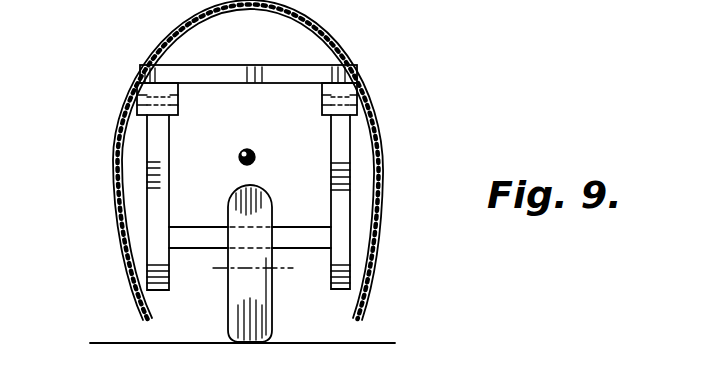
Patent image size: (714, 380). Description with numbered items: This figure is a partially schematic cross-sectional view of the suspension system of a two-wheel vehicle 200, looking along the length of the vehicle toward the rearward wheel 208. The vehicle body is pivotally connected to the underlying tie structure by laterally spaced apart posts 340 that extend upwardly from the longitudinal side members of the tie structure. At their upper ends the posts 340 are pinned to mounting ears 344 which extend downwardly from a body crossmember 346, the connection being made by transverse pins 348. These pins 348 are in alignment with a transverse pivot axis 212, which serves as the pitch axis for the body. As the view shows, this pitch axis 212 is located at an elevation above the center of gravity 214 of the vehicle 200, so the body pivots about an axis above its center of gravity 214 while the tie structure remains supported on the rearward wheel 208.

The two-wheel vehicle 200 is at (141, 37).
The transverse pivot axis 212 is at (378, 98).
The body crossmember 346 is at (320, 71).
The transverse pins 348 is at (357, 64).
The mounting ears 344 is at (322, 106).
The posts 340 is at (150, 159).
The center of gravity 214 is at (255, 160).
The rearward wheel 208 is at (264, 330).